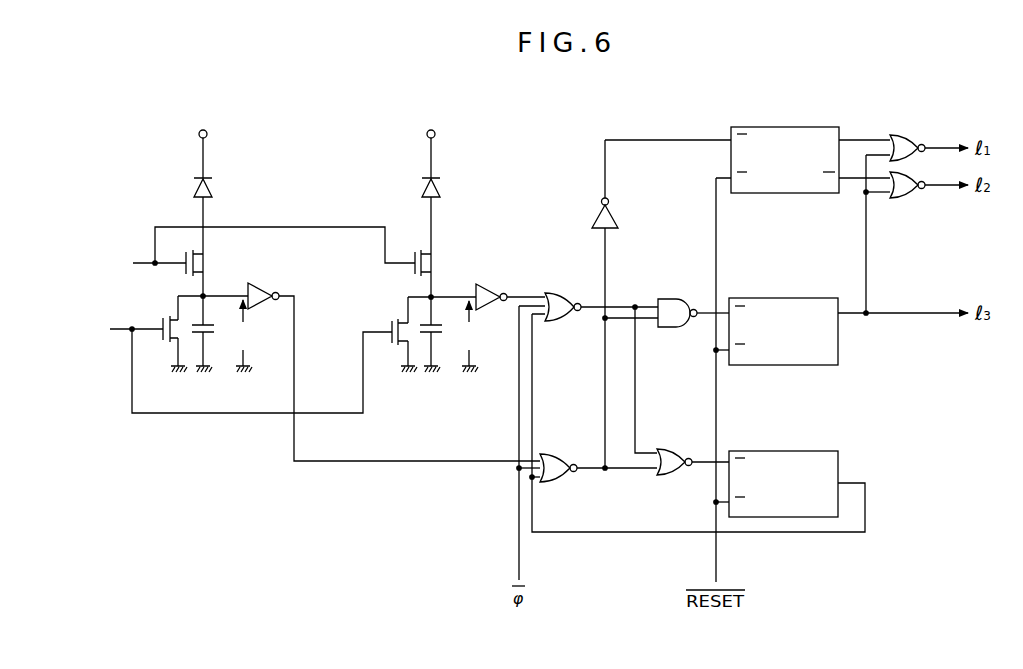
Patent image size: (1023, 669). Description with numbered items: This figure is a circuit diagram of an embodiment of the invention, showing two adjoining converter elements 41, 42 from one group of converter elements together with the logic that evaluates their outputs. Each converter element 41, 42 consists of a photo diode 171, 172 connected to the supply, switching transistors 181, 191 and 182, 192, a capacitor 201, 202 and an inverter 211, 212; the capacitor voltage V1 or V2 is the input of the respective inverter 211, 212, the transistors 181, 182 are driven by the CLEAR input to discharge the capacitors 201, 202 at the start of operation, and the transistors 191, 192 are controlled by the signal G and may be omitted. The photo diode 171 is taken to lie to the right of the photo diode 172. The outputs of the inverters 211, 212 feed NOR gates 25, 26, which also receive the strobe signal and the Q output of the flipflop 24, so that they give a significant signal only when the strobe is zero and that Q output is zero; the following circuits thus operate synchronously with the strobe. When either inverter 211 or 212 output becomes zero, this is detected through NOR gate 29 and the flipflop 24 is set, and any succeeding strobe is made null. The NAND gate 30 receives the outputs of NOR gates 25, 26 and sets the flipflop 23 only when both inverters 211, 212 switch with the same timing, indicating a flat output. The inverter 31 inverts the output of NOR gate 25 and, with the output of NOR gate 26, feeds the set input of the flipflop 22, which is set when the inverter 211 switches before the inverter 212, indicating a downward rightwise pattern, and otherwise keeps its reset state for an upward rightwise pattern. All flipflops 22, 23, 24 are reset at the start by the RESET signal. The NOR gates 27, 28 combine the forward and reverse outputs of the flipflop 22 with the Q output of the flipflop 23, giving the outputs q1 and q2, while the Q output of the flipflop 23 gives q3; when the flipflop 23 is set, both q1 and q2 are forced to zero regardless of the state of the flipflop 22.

The converter element 41 is at (177, 160).
The converter element 42 is at (400, 160).
The photo diode 171 is at (212, 186).
The photo diode 172 is at (440, 186).
The switching transistor 181 is at (170, 318).
The switching transistor 182 is at (392, 318).
The switching transistor 191 is at (200, 266).
The switching transistor 192 is at (430, 266).
The capacitor 201 is at (214, 331).
The capacitor 202 is at (442, 331).
The inverter 211 is at (272, 287).
The inverter 212 is at (502, 290).
The flipflop 22 is at (800, 127).
The flipflop 23 is at (800, 298).
The flipflop 24 is at (800, 451).
The NOR gate 25 is at (556, 296).
The NOR gate 26 is at (552, 455).
The NOR gate 27 is at (900, 135).
The NOR gate 28 is at (900, 198).
The NOR gate 29 is at (664, 452).
The NAND gate 30 is at (667, 298).
The inverter 31 is at (614, 207).